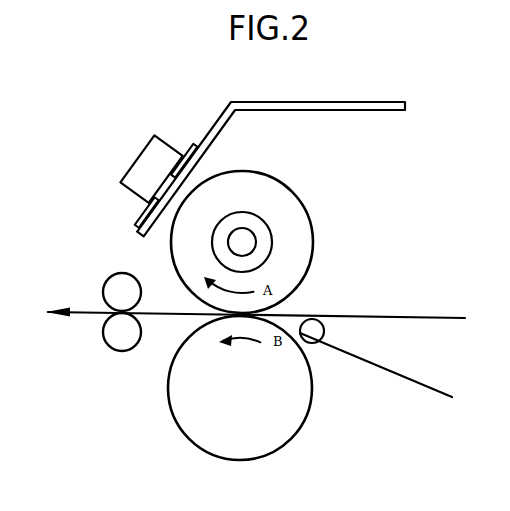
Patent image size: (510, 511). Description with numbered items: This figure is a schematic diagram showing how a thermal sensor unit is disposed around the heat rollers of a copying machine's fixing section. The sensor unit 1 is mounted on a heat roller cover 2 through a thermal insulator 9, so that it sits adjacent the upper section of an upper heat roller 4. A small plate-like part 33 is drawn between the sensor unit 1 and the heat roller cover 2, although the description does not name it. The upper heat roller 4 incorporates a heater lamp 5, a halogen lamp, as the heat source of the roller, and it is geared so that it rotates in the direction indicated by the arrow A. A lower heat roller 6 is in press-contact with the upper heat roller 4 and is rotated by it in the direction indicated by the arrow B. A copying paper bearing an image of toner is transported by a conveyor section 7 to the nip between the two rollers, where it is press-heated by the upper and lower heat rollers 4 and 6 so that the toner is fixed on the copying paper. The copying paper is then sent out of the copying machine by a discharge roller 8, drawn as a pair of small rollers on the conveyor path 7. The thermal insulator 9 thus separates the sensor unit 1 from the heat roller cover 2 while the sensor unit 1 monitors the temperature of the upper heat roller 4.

The sensor unit 1 is at (168, 148).
The heat roller cover 2 is at (229, 120).
The heat sink plate 33 is at (183, 181).
The upper heat roller 4 is at (300, 200).
The heater lamp 5 is at (257, 245).
The lower heat roller 6 is at (311, 410).
The conveyor section 7 is at (417, 317).
The discharge roller 8 is at (118, 348).
The thermal insulator 9 is at (143, 212).